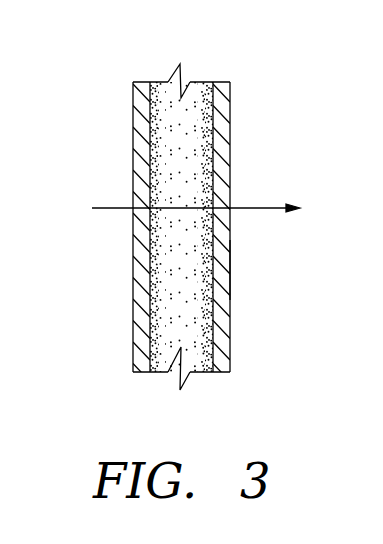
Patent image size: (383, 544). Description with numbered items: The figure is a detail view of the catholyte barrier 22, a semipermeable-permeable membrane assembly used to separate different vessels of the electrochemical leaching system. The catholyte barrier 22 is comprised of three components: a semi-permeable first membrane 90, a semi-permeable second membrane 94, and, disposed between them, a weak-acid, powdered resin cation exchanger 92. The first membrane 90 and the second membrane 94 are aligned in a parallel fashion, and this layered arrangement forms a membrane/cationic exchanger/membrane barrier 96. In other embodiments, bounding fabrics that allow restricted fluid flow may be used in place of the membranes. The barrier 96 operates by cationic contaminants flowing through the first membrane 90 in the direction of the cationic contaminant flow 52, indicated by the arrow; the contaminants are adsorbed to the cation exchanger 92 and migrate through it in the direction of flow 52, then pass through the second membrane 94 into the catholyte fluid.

The catholyte barrier 22 is at (206, 199).
The cationic contaminant flow 52 is at (108, 207).
The first membrane 90 is at (140, 82).
The cation exchanger 92 is at (198, 88).
The second membrane 94 is at (230, 120).
The membrane/cationic exchanger/membrane barrier 96 is at (242, 264).